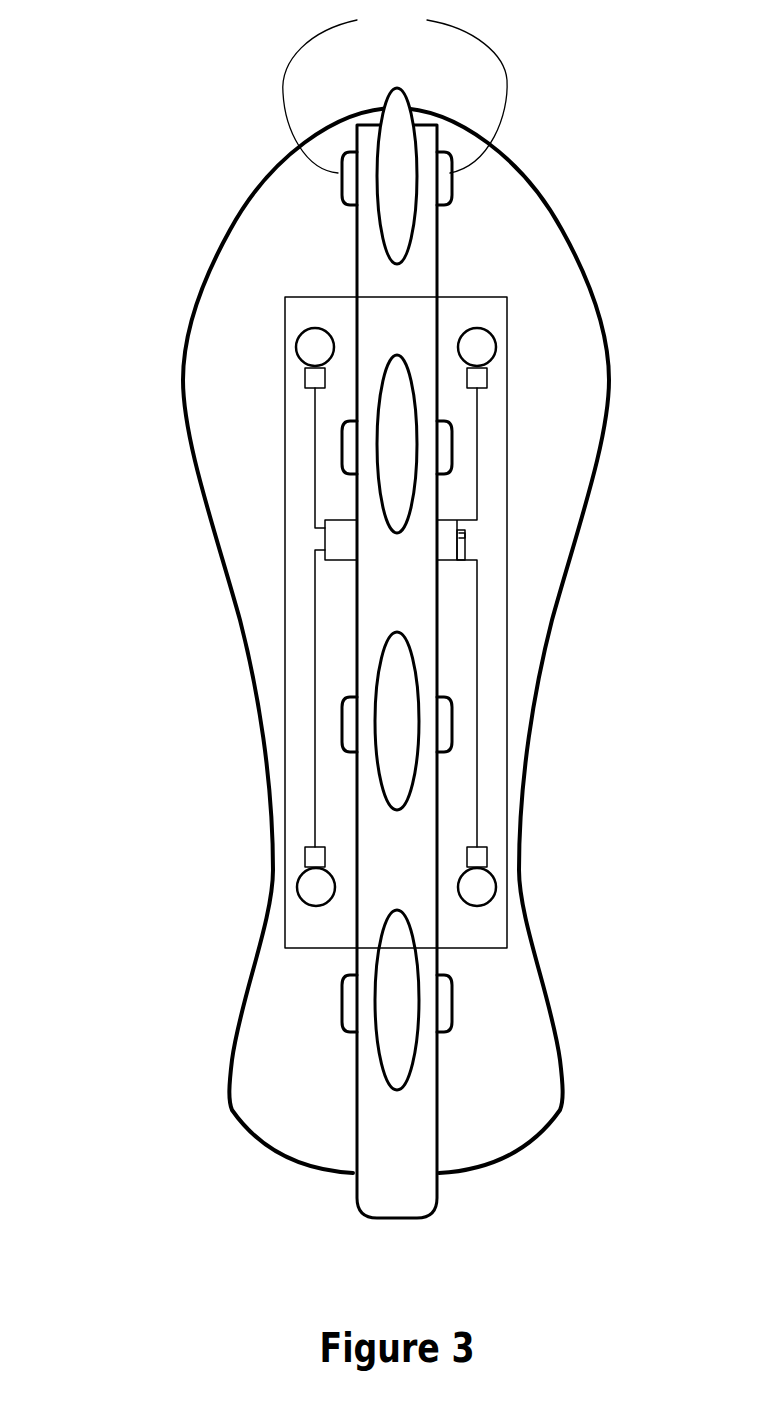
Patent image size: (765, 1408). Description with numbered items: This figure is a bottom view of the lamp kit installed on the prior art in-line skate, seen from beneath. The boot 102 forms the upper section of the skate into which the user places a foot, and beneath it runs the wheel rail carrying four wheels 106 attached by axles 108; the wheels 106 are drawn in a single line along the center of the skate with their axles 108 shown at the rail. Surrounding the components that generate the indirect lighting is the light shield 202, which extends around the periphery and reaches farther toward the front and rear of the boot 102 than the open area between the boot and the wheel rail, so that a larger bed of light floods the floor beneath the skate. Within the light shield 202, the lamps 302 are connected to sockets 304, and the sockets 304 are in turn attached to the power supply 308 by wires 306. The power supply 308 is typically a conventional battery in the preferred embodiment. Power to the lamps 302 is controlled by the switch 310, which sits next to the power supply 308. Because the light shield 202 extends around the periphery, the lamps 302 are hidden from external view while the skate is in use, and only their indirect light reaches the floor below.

The upper boot section 102 is at (203, 325).
The wheels 106 is at (407, 233).
The axles 108 is at (395, 88).
The light shield 202 is at (472, 297).
The lamps 302 is at (305, 347).
The sockets 304 is at (315, 378).
The wires 306 is at (315, 600).
The power supply 308 is at (345, 540).
The switch 310 is at (463, 537).